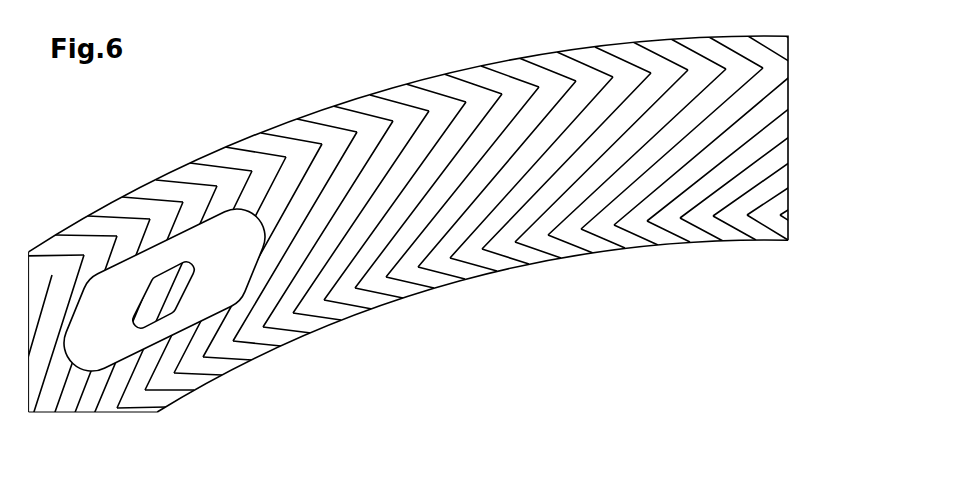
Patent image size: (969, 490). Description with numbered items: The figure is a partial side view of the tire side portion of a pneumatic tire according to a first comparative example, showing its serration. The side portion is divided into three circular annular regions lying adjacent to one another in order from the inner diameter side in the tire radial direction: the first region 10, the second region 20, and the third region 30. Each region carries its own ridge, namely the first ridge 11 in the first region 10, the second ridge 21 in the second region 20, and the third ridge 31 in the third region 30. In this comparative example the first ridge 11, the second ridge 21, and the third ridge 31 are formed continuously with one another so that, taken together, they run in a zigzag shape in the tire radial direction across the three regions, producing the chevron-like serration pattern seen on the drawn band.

The first region 10 is at (804, 218).
The first ridge 11 is at (502, 264).
The second region 20 is at (484, 251).
The second ridge 21 is at (573, 128).
The third region 30 is at (432, 132).
The third ridge 31 is at (560, 68).